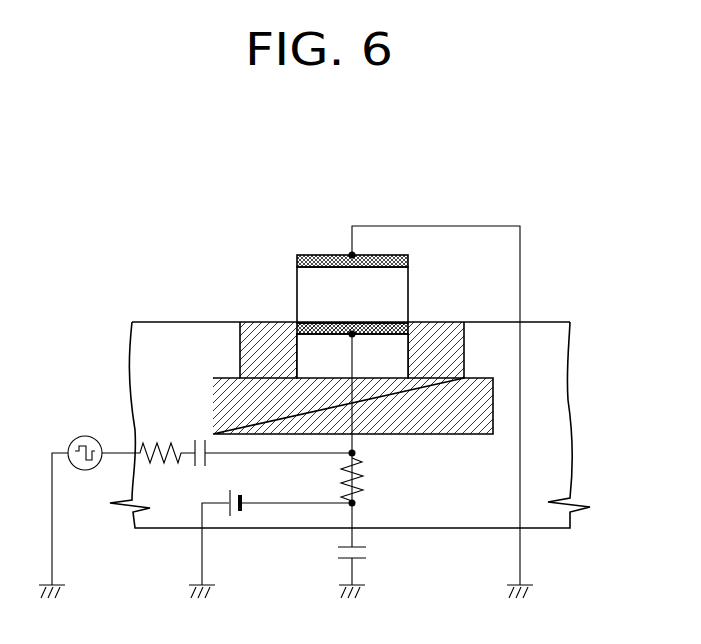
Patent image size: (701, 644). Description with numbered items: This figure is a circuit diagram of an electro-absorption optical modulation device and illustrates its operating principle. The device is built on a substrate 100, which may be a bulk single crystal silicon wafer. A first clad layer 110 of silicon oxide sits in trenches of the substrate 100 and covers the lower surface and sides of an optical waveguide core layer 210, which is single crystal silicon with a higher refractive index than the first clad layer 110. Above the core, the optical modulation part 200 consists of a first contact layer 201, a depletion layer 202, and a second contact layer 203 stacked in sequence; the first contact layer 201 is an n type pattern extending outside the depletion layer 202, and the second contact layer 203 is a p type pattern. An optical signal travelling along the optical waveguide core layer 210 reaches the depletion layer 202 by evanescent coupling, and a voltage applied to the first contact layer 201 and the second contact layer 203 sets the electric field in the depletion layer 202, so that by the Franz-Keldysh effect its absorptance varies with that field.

The substrate 100 is at (557, 462).
The first clad layer 110 is at (227, 402).
The optical waveguide core layer 210 is at (313, 355).
The optical modulation part 200 is at (231, 285).
The first contact layer 201 is at (300, 328).
The depletion layer 202 is at (307, 298).
The second contact layer 203 is at (296, 263).